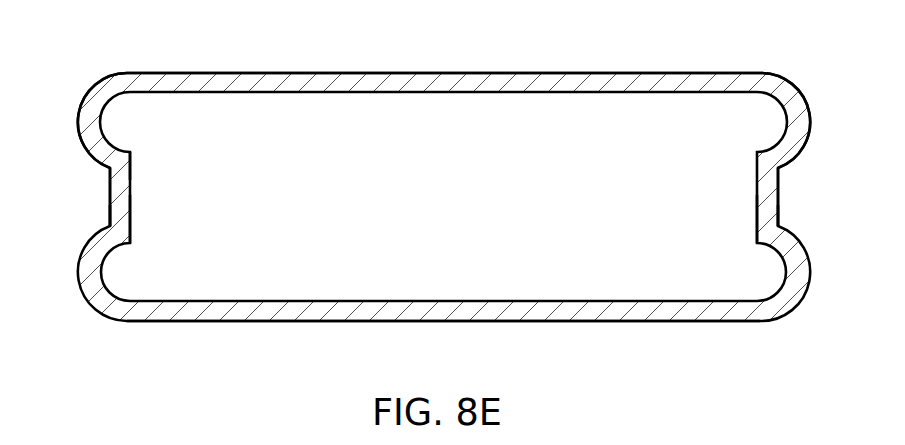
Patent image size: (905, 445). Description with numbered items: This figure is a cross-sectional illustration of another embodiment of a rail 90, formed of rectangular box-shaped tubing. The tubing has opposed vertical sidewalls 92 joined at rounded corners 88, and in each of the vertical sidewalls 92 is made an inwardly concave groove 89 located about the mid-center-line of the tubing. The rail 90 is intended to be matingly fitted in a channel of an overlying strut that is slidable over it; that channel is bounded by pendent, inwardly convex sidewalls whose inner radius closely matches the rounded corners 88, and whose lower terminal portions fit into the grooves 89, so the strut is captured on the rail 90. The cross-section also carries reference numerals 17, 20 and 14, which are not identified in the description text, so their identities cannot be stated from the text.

The rail 90 is at (472, 73).
The rounded corners 88 is at (86, 98).
The wall 17 is at (626, 73).
The notch outer wall 20 is at (109, 196).
The grooves 89 is at (109, 210).
The vertical sidewalls 92 is at (131, 168).
The notch inner wall 14 is at (132, 213).